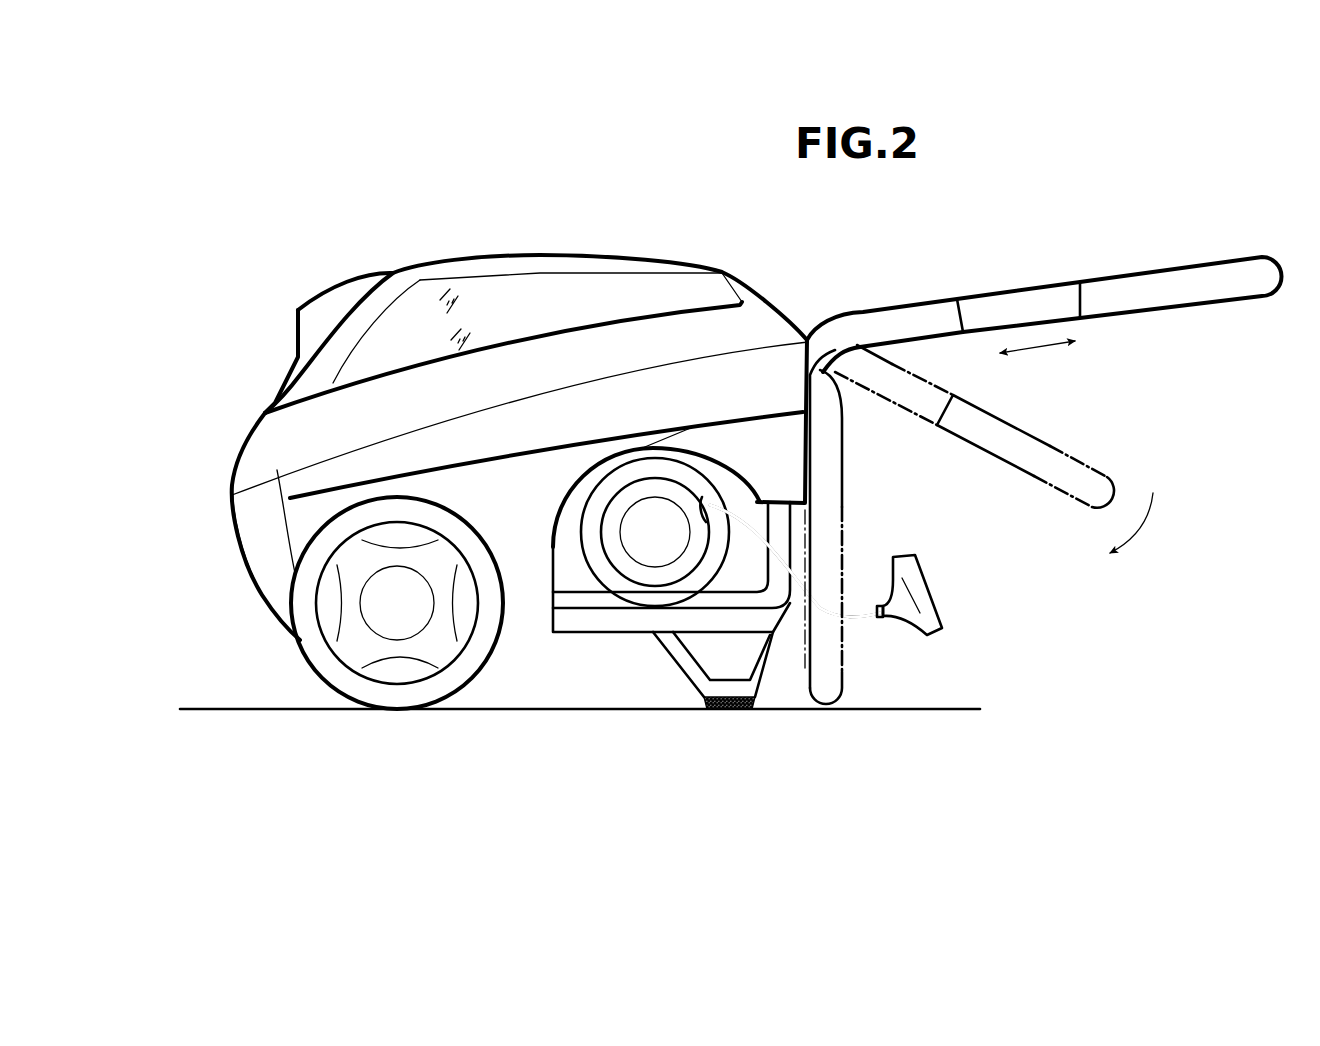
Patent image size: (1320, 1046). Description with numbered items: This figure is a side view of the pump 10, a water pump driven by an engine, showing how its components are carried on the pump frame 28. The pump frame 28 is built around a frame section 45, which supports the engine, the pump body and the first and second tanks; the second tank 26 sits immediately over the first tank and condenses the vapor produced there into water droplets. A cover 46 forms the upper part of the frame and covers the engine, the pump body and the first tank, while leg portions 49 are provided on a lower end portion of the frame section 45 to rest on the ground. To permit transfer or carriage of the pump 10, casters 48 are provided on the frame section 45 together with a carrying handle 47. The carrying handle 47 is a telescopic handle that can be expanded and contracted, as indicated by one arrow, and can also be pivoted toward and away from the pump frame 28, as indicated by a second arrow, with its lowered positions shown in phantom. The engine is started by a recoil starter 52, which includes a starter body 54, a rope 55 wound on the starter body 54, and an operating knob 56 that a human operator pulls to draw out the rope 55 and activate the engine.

The pump 10 is at (266, 142).
The second tank 26 is at (546, 283).
The pump frame 28 is at (540, 652).
The frame section 45 is at (608, 623).
The cover 46 is at (250, 540).
The carrying handle 47 is at (1157, 272).
The casters 48 is at (352, 683).
The leg portions 49 is at (693, 667).
The recoil starter 52 is at (907, 452).
The starter body 54 is at (700, 490).
The rope 55 is at (765, 537).
The operating knob 56 is at (925, 578).